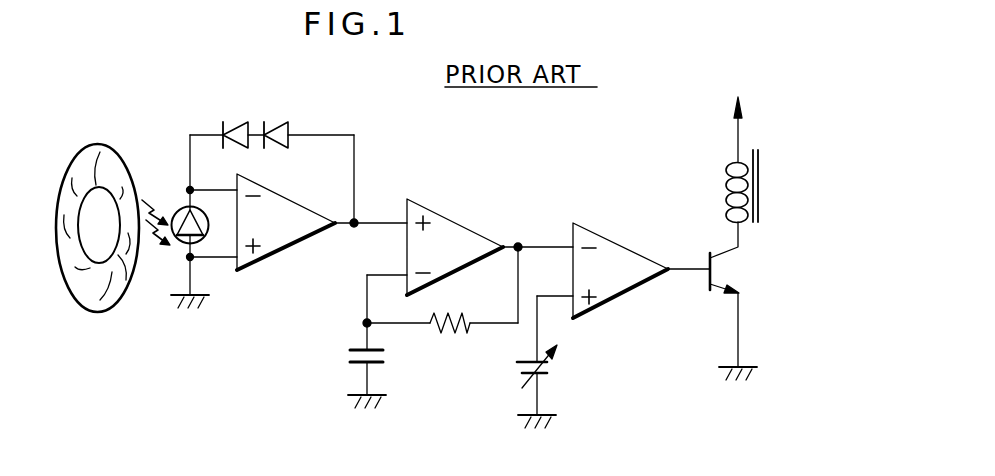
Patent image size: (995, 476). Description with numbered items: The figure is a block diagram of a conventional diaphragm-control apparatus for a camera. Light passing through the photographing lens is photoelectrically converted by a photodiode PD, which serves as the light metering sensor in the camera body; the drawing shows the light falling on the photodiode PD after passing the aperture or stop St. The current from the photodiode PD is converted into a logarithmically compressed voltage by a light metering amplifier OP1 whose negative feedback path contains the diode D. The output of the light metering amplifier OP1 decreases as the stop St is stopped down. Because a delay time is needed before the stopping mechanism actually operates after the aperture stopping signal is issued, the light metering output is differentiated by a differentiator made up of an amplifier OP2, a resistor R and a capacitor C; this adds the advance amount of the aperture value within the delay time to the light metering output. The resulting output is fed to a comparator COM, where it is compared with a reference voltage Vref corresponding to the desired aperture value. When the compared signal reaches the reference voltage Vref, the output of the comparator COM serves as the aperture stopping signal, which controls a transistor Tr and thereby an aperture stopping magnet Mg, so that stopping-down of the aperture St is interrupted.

The aperture or stop St is at (115, 298).
The photodiode PD is at (180, 205).
The negative feedback diode D is at (251, 122).
The light metering amplifier OP1 is at (280, 242).
The amplifier OP2 is at (462, 230).
The resistor R is at (445, 330).
The capacitor C is at (349, 355).
The comparator COM is at (627, 245).
The reference voltage Vref is at (548, 370).
The transistor Tr is at (712, 281).
The aperture stopping magnet Mg is at (730, 185).